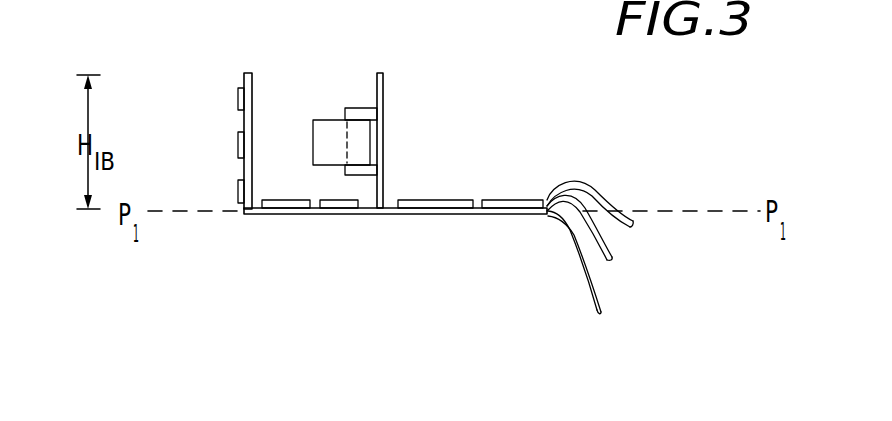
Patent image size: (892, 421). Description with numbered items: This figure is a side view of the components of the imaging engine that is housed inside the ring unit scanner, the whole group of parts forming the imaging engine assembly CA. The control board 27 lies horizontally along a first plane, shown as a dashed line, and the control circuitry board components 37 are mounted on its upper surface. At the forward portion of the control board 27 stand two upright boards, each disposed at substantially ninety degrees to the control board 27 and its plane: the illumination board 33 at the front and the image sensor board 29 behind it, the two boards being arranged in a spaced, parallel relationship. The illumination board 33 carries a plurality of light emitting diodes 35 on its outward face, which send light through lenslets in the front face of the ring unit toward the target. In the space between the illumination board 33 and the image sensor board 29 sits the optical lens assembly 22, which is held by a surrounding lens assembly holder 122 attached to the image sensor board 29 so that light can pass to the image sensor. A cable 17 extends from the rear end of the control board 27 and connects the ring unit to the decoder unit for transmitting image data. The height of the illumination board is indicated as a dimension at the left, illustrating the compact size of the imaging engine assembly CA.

The cable 17 is at (593, 190).
The optical lens assembly 22 is at (328, 108).
The control board 27 is at (428, 200).
The image sensor board 29 is at (384, 100).
The illumination board 33 is at (230, 176).
The light emitting diodes 35 is at (240, 100).
The control circuitry board components 37 is at (295, 214).
The lens assembly holder 122 is at (367, 178).
The imaging engine assembly CA is at (300, 44).